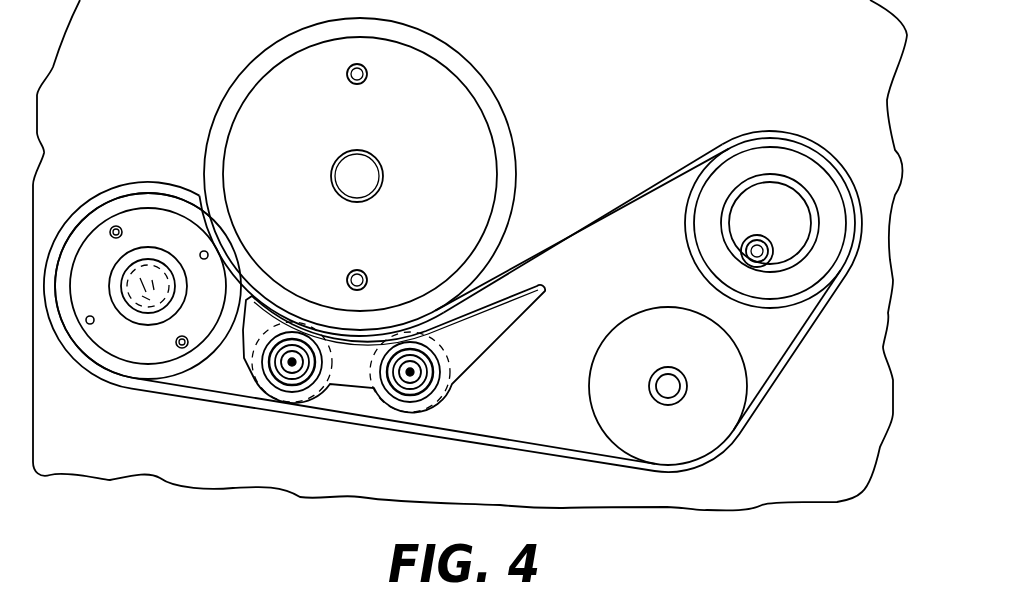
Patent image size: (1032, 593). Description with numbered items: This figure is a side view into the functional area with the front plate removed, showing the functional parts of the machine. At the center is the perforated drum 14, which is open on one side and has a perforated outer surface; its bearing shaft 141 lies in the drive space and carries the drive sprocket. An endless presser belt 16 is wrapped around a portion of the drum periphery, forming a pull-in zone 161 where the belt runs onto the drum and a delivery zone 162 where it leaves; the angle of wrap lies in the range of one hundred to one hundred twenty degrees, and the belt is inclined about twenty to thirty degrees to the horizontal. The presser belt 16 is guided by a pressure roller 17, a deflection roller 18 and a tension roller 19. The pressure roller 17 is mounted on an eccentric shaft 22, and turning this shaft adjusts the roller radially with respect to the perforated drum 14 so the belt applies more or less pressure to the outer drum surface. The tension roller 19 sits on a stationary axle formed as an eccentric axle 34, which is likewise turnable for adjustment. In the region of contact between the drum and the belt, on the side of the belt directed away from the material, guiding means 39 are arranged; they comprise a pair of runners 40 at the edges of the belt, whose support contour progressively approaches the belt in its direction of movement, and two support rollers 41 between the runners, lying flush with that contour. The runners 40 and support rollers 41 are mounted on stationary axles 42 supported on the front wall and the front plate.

The perforated drum 14 is at (505, 100).
The bearing shaft 141 is at (415, 83).
The presser belt 16 is at (602, 208).
The pull-in zone 161 is at (555, 200).
The delivery zone 162 is at (183, 168).
The pressure roller 17 is at (139, 222).
The deflection roller 18 is at (712, 432).
The tension roller 19 is at (785, 167).
The eccentric shaft 22 is at (146, 298).
The eccentric axle 34 is at (752, 203).
The guiding means 39 is at (490, 357).
The runners 40 is at (502, 322).
The support rollers 41 is at (285, 358).
The stationary axles 42 is at (402, 380).